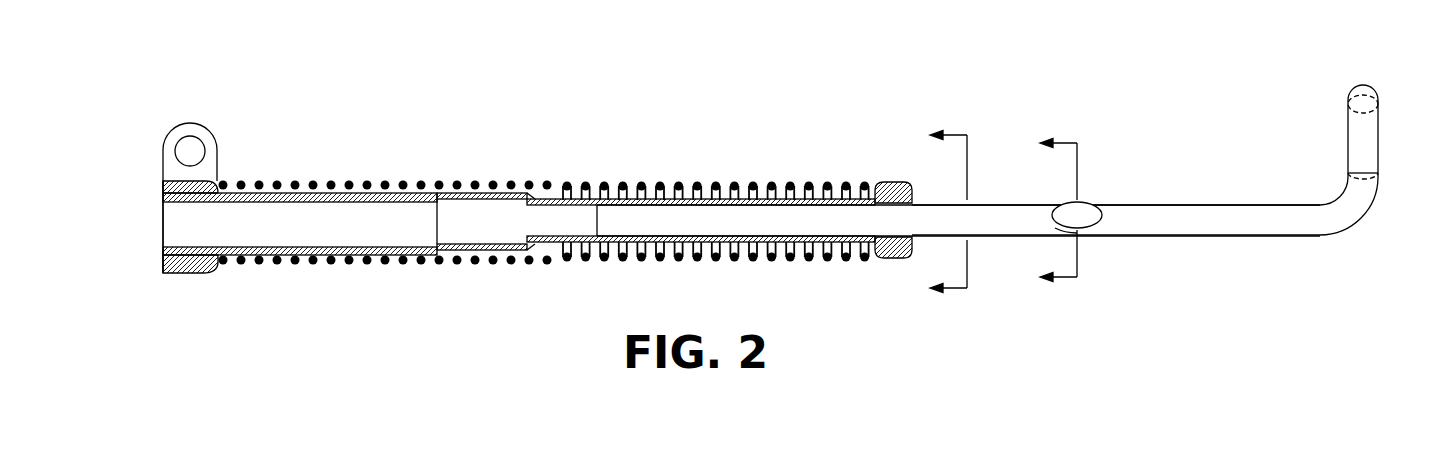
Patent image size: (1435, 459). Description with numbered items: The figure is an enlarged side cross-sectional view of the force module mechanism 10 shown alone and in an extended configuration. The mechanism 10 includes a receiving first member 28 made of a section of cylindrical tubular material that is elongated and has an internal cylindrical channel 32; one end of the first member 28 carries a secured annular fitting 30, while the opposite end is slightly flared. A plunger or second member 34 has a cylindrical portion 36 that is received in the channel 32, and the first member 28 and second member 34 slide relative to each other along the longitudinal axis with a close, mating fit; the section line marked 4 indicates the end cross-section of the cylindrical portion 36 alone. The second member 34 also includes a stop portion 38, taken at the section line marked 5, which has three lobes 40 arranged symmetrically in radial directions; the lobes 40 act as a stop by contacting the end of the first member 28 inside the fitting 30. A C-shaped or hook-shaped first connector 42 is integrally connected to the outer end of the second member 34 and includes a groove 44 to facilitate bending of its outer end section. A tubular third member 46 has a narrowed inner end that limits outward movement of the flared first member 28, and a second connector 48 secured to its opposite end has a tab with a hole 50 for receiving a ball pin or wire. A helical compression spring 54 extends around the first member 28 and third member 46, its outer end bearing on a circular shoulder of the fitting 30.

The mechanism 10 is at (993, 93).
The first member 28 is at (426, 225).
The annular fitting 30 is at (902, 185).
The internal cylindrical channel 32 is at (577, 238).
The second member 34 is at (1200, 200).
The cylindrical portion 36 is at (752, 188).
The stop portion 38 is at (1096, 197).
The lobes 40 is at (1086, 220).
The first connector 42 is at (1365, 137).
The groove 44 is at (1367, 90).
The third member 46 is at (155, 225).
The second connector 48 is at (203, 122).
The hole 50 is at (180, 157).
The helical compression spring 54 is at (597, 182).
The section line 4- 4 is at (934, 212).
The section line 5- 5 is at (1044, 210).